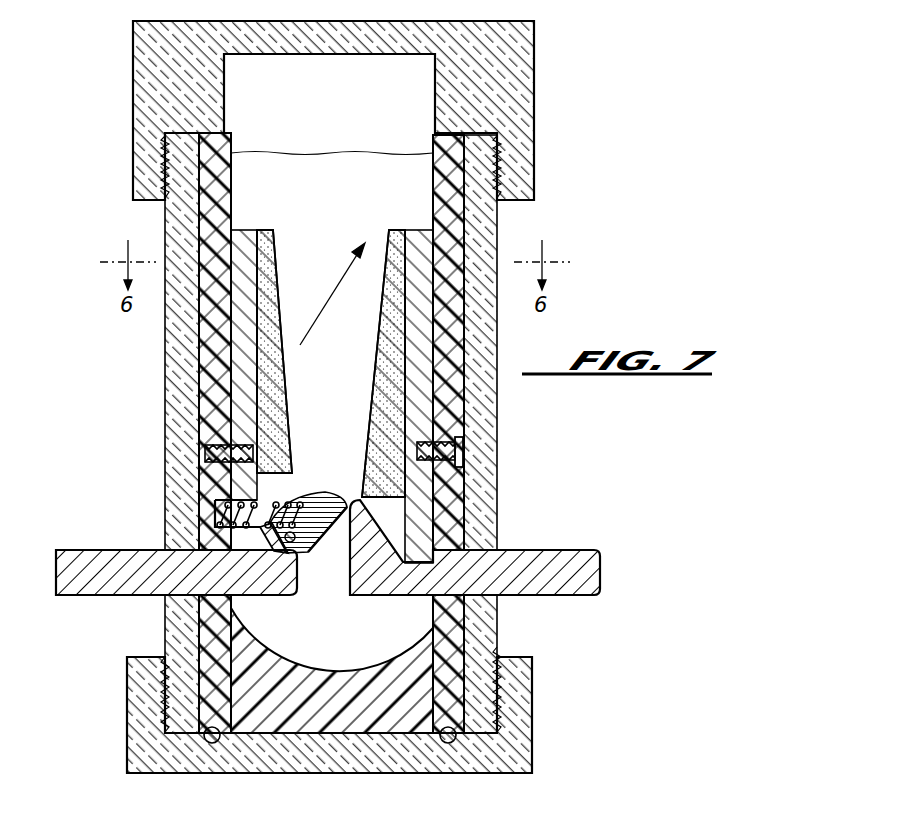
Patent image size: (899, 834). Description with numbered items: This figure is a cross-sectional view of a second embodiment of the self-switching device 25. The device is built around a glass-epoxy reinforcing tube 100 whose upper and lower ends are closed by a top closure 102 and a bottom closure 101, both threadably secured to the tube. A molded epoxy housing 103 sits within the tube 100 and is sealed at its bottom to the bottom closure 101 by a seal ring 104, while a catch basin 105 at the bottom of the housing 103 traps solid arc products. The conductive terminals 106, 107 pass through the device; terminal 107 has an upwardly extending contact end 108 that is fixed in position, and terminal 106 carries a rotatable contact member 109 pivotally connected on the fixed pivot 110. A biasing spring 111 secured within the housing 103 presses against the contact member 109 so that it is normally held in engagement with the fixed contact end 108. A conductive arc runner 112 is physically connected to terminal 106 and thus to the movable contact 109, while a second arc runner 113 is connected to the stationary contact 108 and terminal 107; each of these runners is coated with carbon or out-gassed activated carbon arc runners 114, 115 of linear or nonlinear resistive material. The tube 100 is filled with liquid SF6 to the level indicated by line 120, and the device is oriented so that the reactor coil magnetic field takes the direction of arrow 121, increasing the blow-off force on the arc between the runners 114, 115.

The self-switching device 25 is at (158, 418).
The glass-epoxy reinforcing tube 100 is at (483, 477).
The bottom closure 101 is at (520, 731).
The top closure 102 is at (536, 72).
The molded epoxy housing 103 is at (450, 410).
The seal ring 104 is at (448, 745).
The catch basin 105 is at (307, 718).
The terminal 106 is at (93, 597).
The terminal 107 is at (573, 550).
The contact end 108 is at (367, 585).
The rotatable contact member 109 is at (328, 495).
The fixed pivot 110 is at (300, 560).
The biasing spring 111 is at (227, 503).
The conductive arc runner 112 is at (243, 345).
The arc runner 113 is at (420, 528).
The carbon arc runner 114 is at (278, 305).
The carbon arc runner 115 is at (375, 375).
The liquid level line 120 is at (320, 152).
The magnetic field direction arrow 121 is at (340, 283).